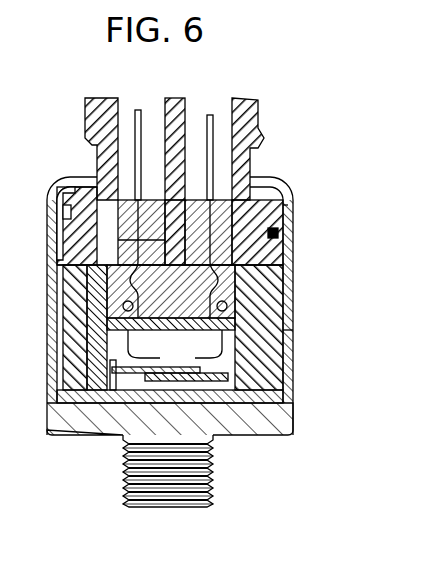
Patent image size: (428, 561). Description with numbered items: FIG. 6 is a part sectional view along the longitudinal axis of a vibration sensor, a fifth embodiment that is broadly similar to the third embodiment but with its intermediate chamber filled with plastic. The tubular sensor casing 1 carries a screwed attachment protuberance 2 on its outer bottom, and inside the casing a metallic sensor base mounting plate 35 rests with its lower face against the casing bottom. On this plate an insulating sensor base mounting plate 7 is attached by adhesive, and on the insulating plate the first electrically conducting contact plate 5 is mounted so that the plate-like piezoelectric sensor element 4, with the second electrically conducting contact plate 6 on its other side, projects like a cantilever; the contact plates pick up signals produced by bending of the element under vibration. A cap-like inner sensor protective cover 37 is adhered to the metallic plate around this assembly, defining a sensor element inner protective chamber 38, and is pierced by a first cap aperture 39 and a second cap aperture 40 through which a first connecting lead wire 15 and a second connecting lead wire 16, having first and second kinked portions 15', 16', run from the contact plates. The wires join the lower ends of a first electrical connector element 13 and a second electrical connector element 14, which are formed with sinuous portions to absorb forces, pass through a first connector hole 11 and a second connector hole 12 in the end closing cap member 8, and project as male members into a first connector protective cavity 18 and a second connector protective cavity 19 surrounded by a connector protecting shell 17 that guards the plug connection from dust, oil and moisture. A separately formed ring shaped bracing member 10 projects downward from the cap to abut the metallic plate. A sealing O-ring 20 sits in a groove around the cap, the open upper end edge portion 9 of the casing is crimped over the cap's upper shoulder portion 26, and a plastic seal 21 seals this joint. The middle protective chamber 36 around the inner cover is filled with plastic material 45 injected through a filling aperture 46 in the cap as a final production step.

The tubular sensor casing 1 is at (290, 310).
The screwed attachment protuberance 2 is at (214, 478).
The sensor element 4 is at (169, 367).
The first electrically conducting contact plate 5 is at (200, 395).
The second electrically conducting contact plate 6 is at (150, 395).
The insulating sensor base mounting plate 7 is at (232, 395).
The end closing cap member 8 is at (290, 210).
The open upper end edge portion 9 is at (274, 183).
The ring shaped bracing member 10 is at (280, 349).
The first connector hole 11 is at (209, 232).
The second connector hole 12 is at (130, 230).
The first electrical connector element 13 is at (210, 115).
The second electrical connector element 14 is at (138, 110).
The first connecting lead wire 15 is at (203, 343).
The second connecting lead wire 16 is at (153, 343).
The first kinked portion 15' is at (201, 300).
The second kinked portion 16' is at (146, 300).
The connector protecting shell 17 is at (240, 100).
The first connector protective cavity 18 is at (222, 125).
The second connector protective cavity 19 is at (125, 120).
The sealing O-ring 20 is at (283, 235).
The plastic seal 21 is at (70, 180).
The upper shoulder portion 26 is at (65, 213).
The metallic sensor base mounting plate 35 is at (290, 422).
The middle protective chamber 36 is at (62, 295).
The inner sensor protective cover 37 is at (290, 387).
The sensor element inner protective chamber 38 is at (60, 356).
The first cap aperture 39 is at (224, 302).
The second cap aperture 40 is at (163, 291).
The plastic material 45 is at (285, 280).
The filling aperture 46 is at (138, 242).